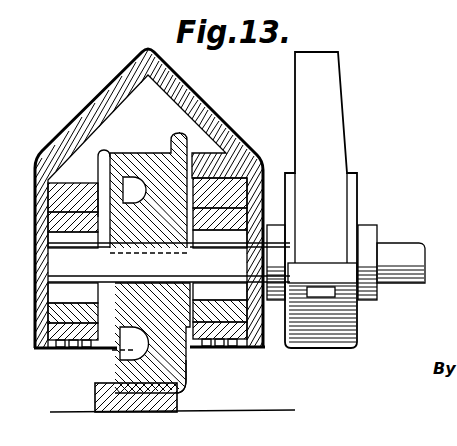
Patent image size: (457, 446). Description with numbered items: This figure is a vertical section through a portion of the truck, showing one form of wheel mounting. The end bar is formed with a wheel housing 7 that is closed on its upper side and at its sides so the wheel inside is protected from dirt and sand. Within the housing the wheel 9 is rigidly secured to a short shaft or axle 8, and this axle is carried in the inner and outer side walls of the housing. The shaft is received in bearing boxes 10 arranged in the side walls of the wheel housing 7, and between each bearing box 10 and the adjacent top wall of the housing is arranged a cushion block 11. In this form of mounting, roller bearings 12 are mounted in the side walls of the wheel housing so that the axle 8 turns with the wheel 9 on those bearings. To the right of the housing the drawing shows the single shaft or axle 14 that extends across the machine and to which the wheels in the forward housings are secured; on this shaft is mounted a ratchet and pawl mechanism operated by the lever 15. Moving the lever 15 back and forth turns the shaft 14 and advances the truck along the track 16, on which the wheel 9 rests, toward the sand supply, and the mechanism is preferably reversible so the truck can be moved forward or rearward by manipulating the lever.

The wheel housing 7 is at (58, 150).
The short shaft 8 is at (240, 262).
The wheel 9 is at (188, 377).
The bearing box 10 is at (122, 200).
The cushion block 11 is at (80, 190).
The roller bearings 12 is at (80, 246).
The shaft or axle 14 is at (392, 243).
The lever 15 is at (330, 124).
The track 16 is at (95, 393).